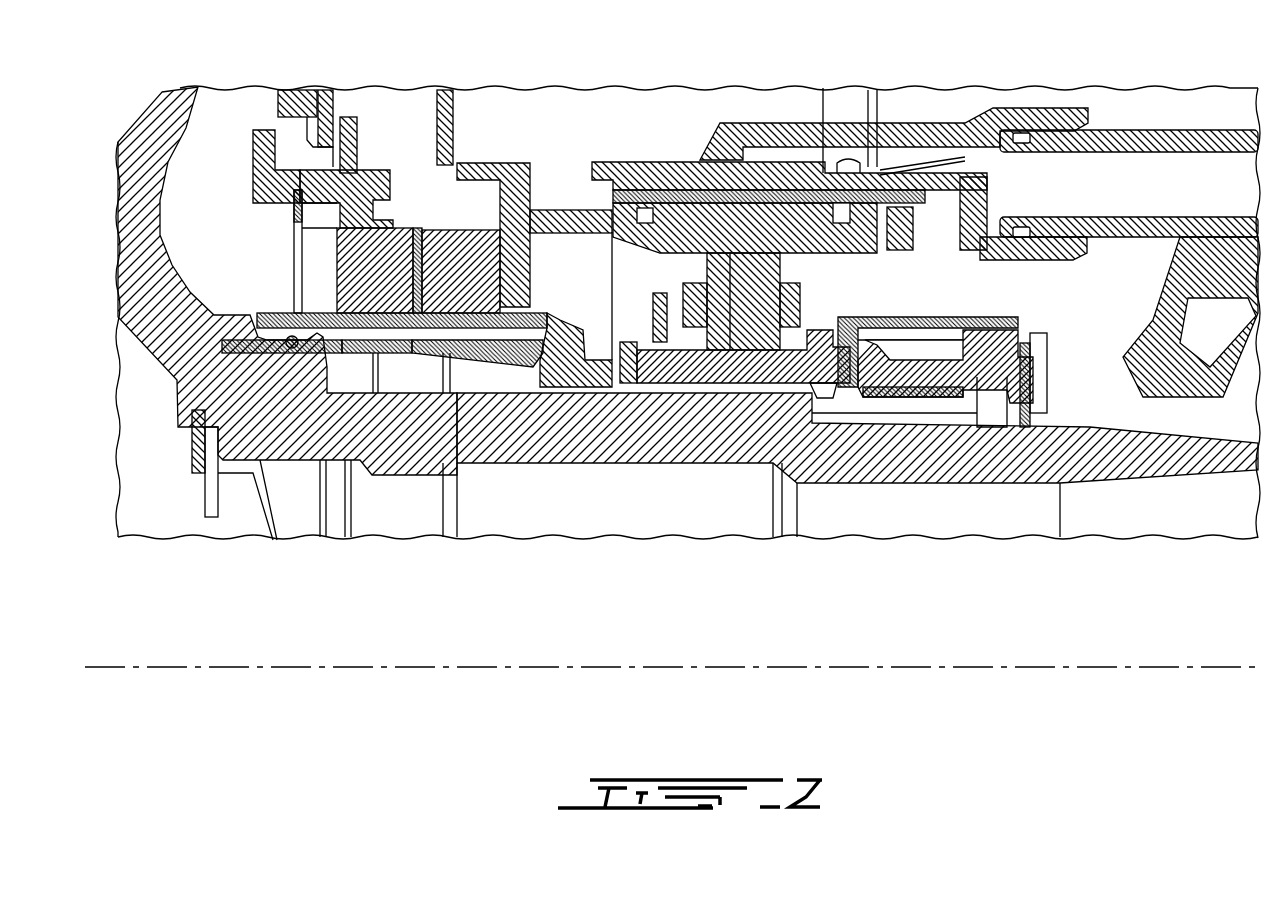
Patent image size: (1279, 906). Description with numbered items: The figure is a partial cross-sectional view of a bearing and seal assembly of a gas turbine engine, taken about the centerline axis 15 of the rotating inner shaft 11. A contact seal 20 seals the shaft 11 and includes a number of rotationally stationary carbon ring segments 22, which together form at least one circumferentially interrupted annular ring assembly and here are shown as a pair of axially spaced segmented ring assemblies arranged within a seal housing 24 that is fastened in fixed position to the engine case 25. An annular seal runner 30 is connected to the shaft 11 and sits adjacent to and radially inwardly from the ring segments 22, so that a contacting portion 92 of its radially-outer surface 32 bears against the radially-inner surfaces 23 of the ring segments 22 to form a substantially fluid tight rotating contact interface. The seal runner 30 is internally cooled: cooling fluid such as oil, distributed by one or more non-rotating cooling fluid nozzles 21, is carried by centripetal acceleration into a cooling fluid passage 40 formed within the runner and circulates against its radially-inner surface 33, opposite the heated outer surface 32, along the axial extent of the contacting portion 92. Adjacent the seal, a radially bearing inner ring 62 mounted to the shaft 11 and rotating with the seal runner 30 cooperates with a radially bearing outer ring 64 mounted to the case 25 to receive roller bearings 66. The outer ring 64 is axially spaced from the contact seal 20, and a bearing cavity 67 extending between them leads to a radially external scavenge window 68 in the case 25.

The inner shaft 11 is at (1090, 427).
The centerline axis 15 is at (977, 668).
The contact seal 20 is at (445, 178).
The cooling fluid nozzle 21 is at (1196, 247).
The ring segments 22 is at (405, 205).
The radially-inner surfaces 23 is at (380, 345).
The seal housing 24 is at (317, 225).
The case 25 is at (634, 143).
The seal runner 30 is at (545, 300).
The radially-outer surface 32 is at (293, 90).
The radially-inner surface 33 is at (425, 350).
The cooling fluid passage 40 is at (467, 338).
The radially bearing inner ring 62 is at (733, 367).
The radially bearing outer ring 64 is at (780, 228).
The roller bearings 66 is at (732, 290).
The bearing cavity 67 is at (563, 290).
The scavenge window 68 is at (541, 180).
The contacting portion 92 is at (450, 200).